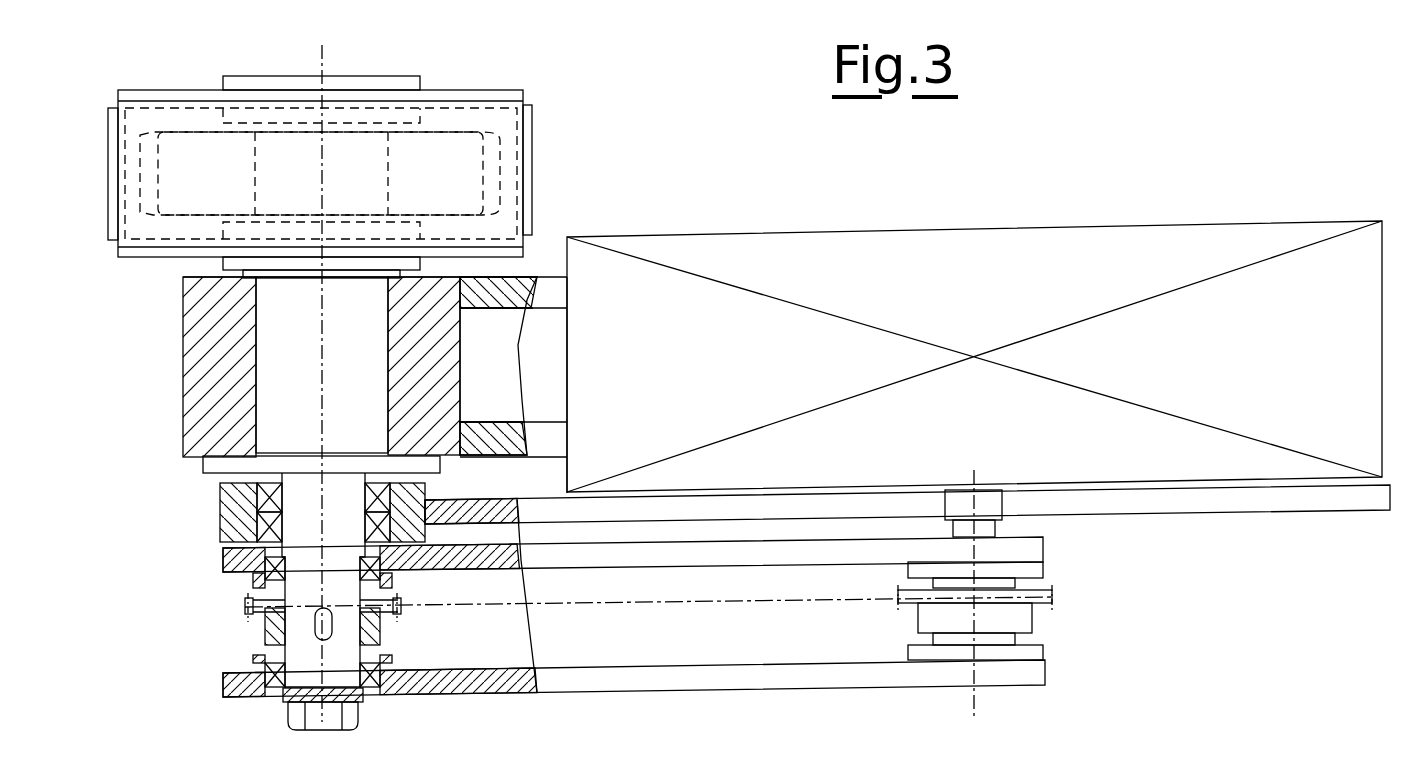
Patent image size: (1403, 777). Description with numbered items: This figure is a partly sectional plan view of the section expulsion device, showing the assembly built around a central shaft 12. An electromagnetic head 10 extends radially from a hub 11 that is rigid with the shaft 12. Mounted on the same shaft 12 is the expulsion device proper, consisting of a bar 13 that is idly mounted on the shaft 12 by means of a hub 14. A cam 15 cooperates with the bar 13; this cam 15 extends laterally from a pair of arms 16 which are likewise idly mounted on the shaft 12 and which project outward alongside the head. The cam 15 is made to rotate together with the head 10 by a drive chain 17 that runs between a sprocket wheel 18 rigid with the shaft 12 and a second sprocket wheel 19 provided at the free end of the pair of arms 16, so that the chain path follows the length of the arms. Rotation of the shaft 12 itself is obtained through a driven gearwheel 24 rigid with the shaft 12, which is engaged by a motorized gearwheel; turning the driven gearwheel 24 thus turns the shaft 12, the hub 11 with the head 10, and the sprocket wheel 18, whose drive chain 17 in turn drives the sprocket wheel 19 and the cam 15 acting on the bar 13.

The electromagnetic head 10 is at (1073, 242).
The hub 11 is at (215, 384).
The shaft 12 is at (278, 319).
The bar 13 is at (1313, 498).
The hub 14 is at (235, 510).
The cam 15 is at (993, 508).
The pair of arms 16 is at (767, 553).
The drive chain 17 is at (632, 603).
The sprocket wheel 18 is at (245, 605).
The sprocket wheel 19 is at (1057, 600).
The driven gearwheel 24 is at (478, 158).